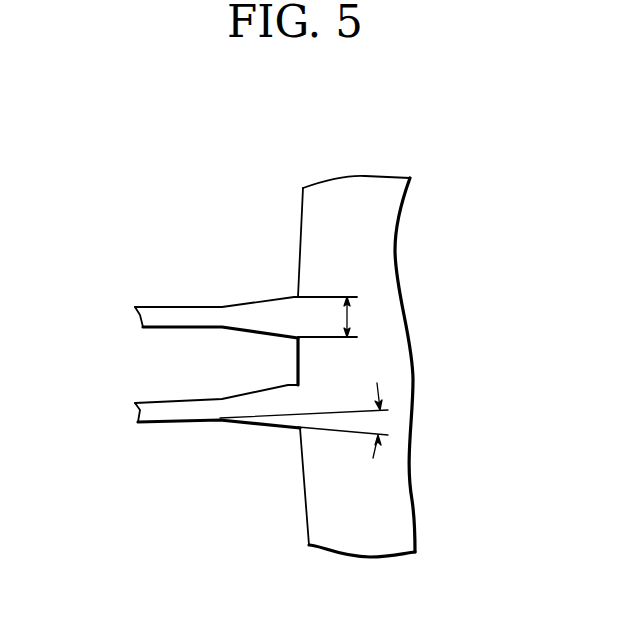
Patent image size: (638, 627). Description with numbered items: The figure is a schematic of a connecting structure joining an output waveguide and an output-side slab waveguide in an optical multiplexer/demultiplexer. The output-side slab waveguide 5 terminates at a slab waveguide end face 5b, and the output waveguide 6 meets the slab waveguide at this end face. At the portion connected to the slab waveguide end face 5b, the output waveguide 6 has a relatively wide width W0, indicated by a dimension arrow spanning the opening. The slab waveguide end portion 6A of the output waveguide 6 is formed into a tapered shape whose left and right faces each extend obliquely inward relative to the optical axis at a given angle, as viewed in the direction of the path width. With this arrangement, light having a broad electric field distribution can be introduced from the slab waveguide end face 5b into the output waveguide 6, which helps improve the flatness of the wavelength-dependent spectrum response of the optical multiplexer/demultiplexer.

The output-side slab waveguide 5 is at (314, 325).
The slab waveguide end face 5b is at (300, 220).
The output waveguide 6 is at (217, 373).
The slab waveguide end portion of the output waveguide 6A is at (253, 315).
The width WO is at (348, 317).